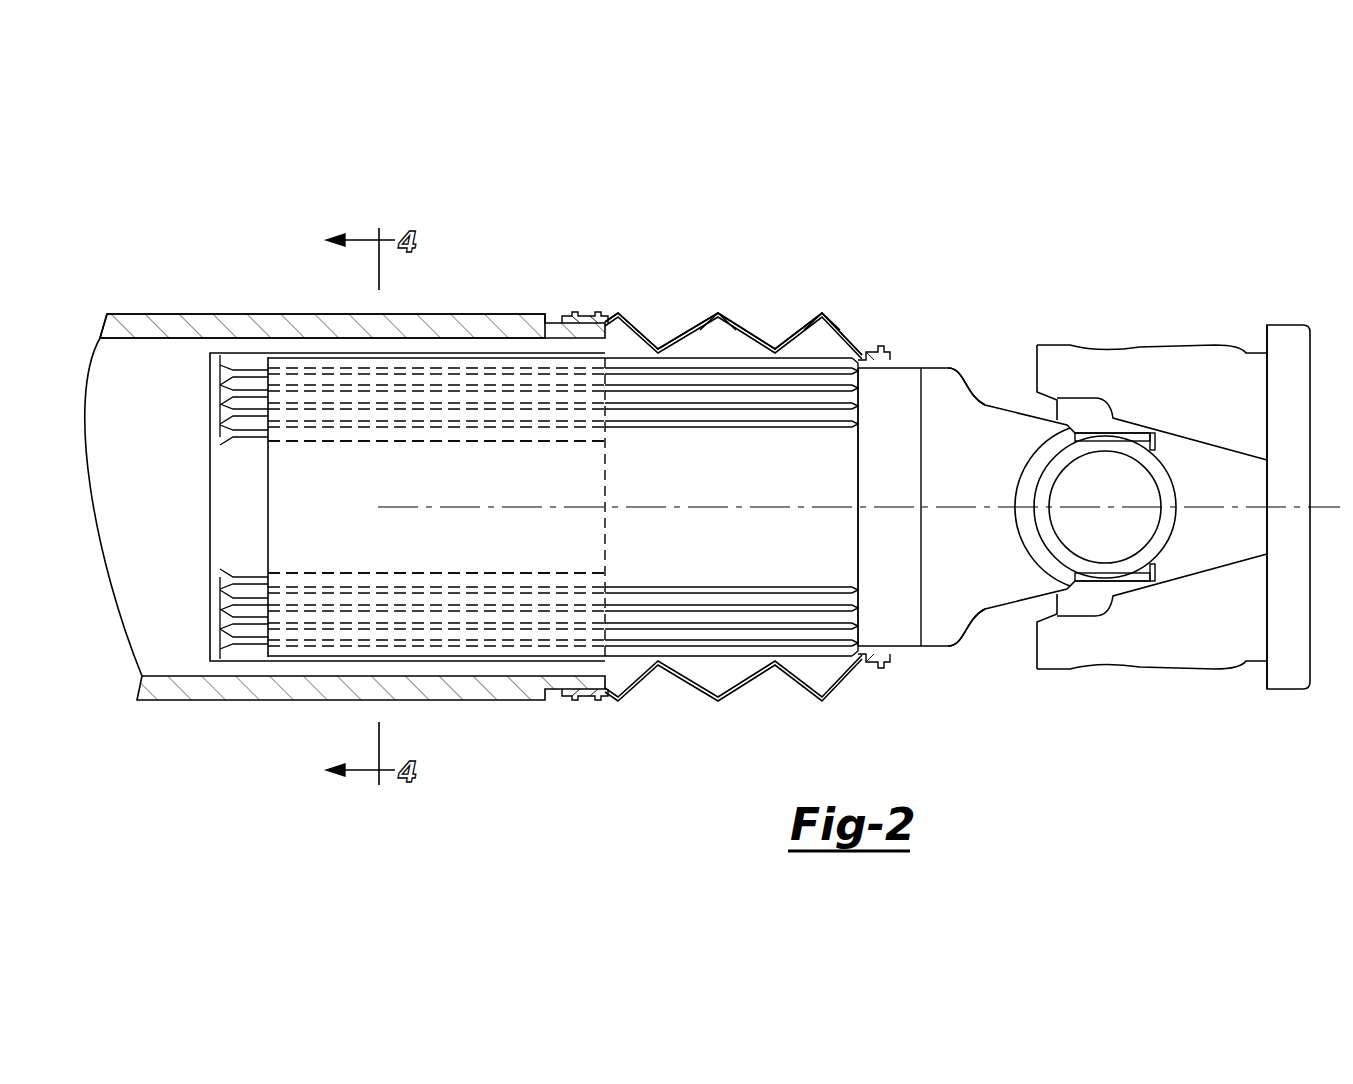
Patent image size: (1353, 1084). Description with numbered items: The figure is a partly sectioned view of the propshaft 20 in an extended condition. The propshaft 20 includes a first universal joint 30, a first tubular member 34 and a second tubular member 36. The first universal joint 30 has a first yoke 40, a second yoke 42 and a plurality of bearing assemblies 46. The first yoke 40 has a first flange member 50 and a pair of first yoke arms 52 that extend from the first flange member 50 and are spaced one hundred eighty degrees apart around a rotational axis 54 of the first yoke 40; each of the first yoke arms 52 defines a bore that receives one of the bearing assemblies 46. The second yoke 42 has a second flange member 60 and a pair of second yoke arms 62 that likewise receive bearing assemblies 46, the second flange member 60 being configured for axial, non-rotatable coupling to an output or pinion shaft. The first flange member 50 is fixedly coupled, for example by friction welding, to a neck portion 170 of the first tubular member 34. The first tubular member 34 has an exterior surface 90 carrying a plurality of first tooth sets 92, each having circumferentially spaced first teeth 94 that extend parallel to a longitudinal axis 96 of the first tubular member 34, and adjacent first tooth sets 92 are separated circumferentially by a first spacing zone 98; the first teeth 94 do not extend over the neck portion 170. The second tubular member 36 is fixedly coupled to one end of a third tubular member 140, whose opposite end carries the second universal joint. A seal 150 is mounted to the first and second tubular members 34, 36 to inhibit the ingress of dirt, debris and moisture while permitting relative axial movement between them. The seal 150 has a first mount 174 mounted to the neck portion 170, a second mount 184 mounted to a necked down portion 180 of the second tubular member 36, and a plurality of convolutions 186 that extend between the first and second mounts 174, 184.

The propshaft 20 is at (537, 255).
The first universal joint 30 is at (1123, 272).
The first tubular member 34 is at (863, 478).
The second tubular member 36 is at (338, 313).
The first yoke 40 is at (993, 618).
The second yoke 42 is at (1240, 650).
The bearing assemblies 46 is at (1137, 487).
The first flange member 50 is at (940, 643).
The first yoke arms 52 is at (992, 410).
The rotational axis 54 is at (436, 507).
The second flange member 60 is at (1290, 668).
The second yoke arms 62 is at (1160, 365).
The exterior surface 90 is at (640, 553).
The first tooth sets 92 is at (725, 347).
The first teeth 94 is at (797, 400).
The longitudinal axis 96 is at (565, 505).
The first spacing zone 98 is at (688, 472).
The third tubular member 140 is at (215, 313).
The seal 150 is at (740, 210).
The neck portion 170 is at (905, 648).
The first mount 174 is at (885, 347).
The necked down portion 180 is at (572, 313).
The second mount 184 is at (600, 313).
The convolutions 186 is at (718, 312).